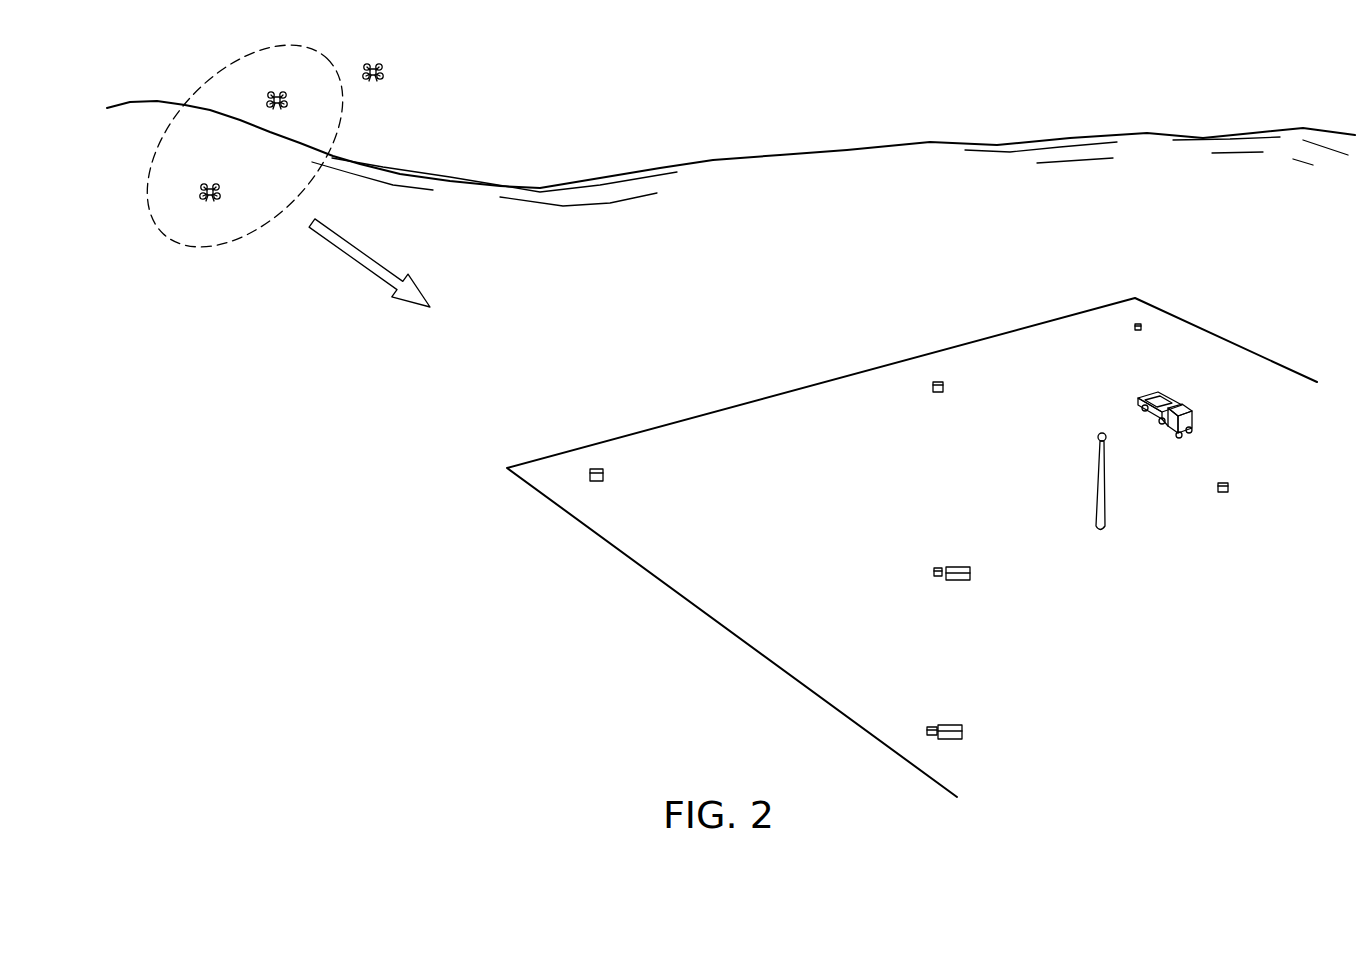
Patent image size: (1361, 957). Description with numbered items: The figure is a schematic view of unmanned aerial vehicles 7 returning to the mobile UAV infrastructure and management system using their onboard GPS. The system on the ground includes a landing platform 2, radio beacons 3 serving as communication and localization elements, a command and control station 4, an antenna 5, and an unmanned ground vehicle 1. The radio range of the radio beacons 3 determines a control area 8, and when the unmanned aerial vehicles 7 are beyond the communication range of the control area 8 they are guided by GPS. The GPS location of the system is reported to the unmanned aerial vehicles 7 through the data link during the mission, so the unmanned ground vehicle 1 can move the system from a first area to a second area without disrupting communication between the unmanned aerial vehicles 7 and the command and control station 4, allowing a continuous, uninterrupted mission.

The unmanned ground vehicle 1 is at (1172, 407).
The landing platform 2 is at (958, 567).
The radio beacon 3 is at (596, 469).
The command and control station 4 is at (1223, 481).
The antenna 5 is at (1105, 512).
The unmanned aerial vehicle 7 is at (383, 73).
The control area 8 is at (1193, 323).